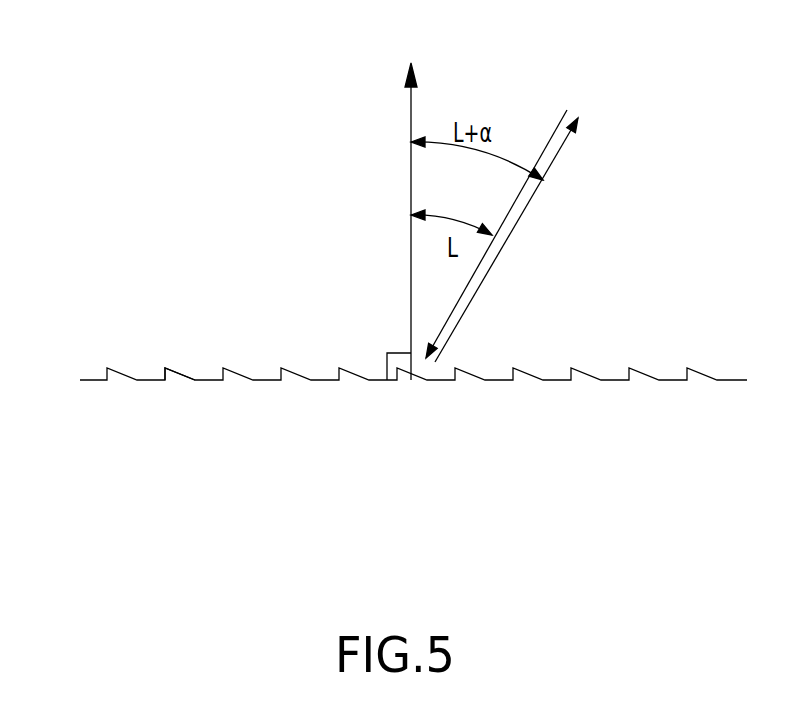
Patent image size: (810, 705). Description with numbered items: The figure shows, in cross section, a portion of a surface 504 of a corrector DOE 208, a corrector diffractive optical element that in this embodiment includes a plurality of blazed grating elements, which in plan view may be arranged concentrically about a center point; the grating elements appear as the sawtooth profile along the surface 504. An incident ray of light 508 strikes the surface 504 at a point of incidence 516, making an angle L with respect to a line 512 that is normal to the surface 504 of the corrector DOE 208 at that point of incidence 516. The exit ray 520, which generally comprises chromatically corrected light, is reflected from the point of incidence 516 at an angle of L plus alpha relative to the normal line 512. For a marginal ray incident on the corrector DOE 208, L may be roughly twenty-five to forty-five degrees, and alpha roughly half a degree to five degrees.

The corrector DOE 208 is at (125, 417).
The surface 504 is at (165, 375).
The incident ray of light 508 is at (557, 128).
The line 512 is at (411, 95).
The point of incidence 516 is at (420, 372).
The exit ray 520 is at (558, 158).